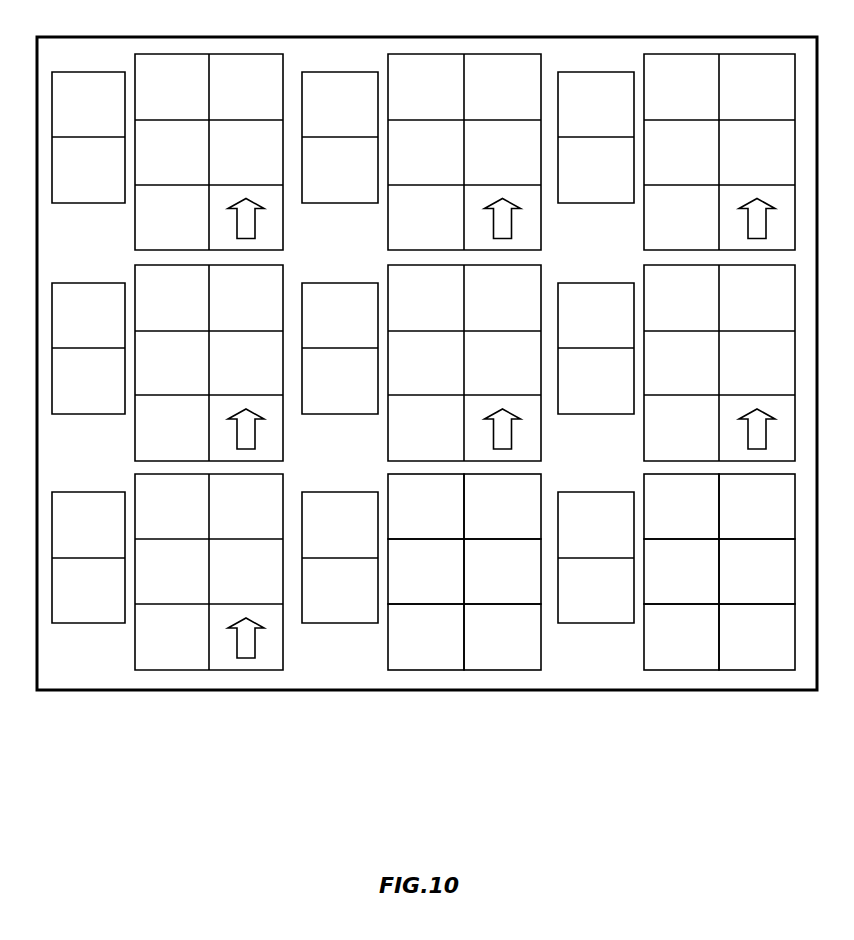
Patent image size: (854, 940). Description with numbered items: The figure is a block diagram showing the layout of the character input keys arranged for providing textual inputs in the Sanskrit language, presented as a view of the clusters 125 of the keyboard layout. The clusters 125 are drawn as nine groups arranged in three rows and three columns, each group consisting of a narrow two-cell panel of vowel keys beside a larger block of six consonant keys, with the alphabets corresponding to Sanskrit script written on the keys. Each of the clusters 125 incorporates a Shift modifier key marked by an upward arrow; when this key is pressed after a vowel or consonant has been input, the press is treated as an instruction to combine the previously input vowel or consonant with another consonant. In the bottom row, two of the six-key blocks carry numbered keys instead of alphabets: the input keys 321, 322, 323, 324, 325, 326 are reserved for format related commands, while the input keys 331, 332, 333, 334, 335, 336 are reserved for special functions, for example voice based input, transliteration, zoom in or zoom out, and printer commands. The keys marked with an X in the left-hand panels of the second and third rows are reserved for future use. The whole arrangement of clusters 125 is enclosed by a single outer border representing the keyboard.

The clusters 125 is at (427, 399).
The input key 321 is at (426, 506).
The input key 322 is at (502, 506).
The input key 323 is at (426, 571).
The input key 324 is at (502, 571).
The input key 325 is at (426, 637).
The input key 326 is at (502, 637).
The input key 331 is at (681, 506).
The input key 332 is at (757, 506).
The input key 333 is at (681, 571).
The input key 334 is at (757, 571).
The input key 335 is at (681, 637).
The input key 336 is at (757, 637).